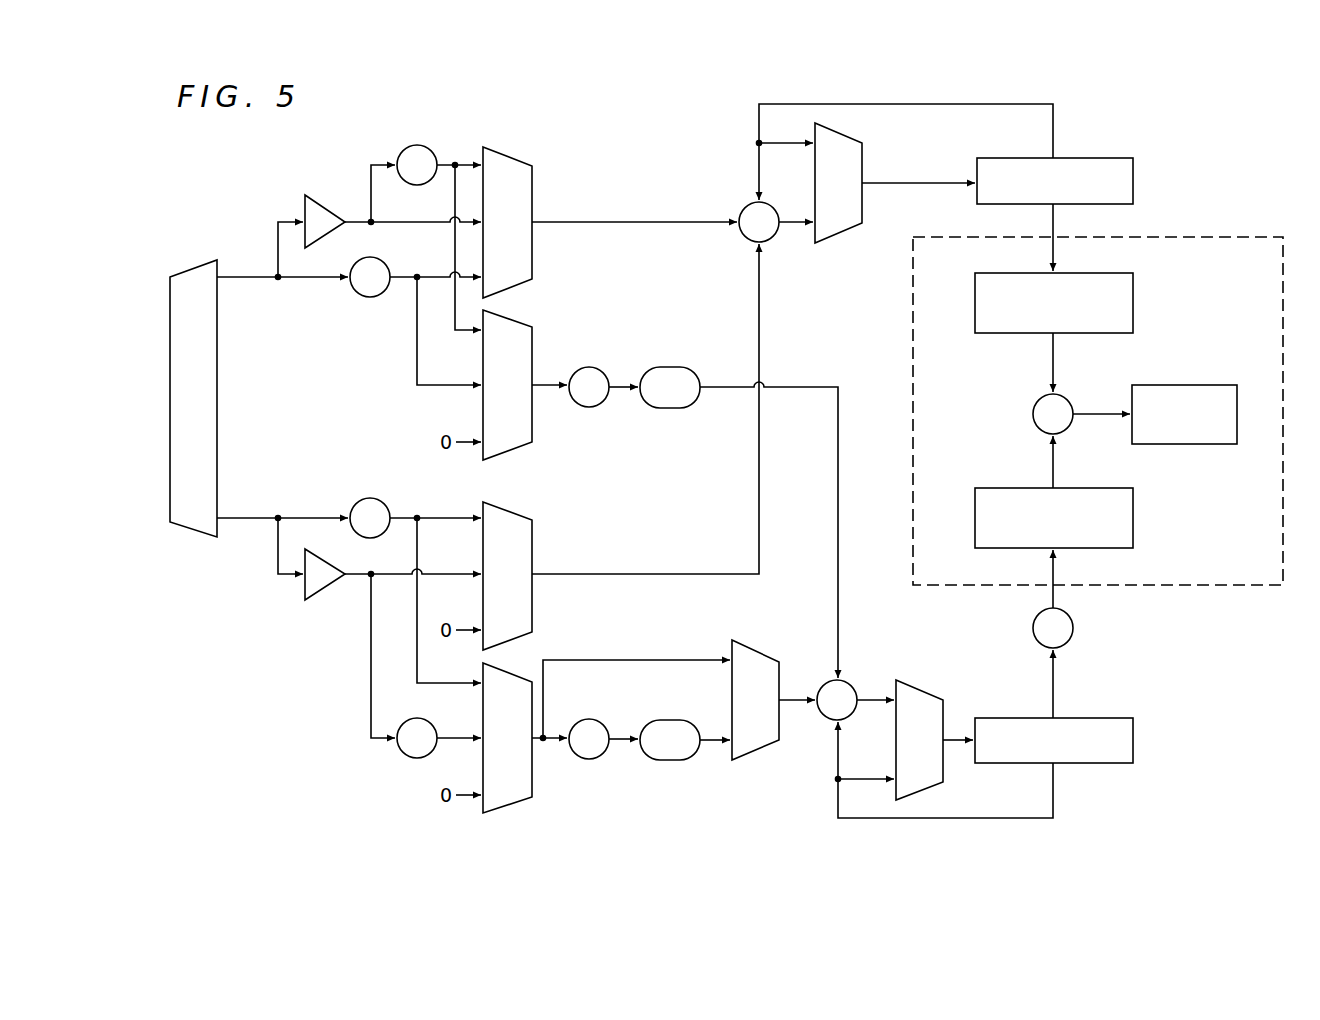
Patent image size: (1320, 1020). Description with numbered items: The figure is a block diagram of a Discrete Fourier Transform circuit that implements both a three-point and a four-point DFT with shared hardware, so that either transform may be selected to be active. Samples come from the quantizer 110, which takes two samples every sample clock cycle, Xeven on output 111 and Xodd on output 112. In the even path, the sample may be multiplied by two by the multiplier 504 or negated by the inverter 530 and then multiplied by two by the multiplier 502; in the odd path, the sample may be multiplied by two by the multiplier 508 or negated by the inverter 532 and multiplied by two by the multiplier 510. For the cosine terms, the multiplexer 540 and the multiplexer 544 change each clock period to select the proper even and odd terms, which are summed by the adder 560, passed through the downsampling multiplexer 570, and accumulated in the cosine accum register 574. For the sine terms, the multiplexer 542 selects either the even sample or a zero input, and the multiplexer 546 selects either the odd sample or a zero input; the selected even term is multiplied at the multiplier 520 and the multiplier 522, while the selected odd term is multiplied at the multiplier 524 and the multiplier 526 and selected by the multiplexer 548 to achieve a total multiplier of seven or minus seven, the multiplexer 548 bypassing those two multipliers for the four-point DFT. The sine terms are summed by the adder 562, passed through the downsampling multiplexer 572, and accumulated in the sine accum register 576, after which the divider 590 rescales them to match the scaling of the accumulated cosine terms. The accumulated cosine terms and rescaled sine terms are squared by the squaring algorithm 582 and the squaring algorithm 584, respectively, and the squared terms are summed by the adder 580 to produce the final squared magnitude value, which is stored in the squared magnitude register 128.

The quantizer 110 is at (194, 264).
The Xeven output 111 is at (243, 282).
The Xodd output 112 is at (243, 523).
The squared magnitude register 128 is at (1180, 385).
The multiplier 502 is at (417, 144).
The multiplier 504 is at (358, 296).
The multiplier 508 is at (372, 497).
The multiplier 510 is at (400, 756).
The multiplier 520 is at (591, 365).
The multiplier 522 is at (672, 365).
The multiplier 524 is at (591, 719).
The multiplier 526 is at (672, 720).
The inverter 530 is at (323, 197).
The inverter 532 is at (316, 607).
The multiplexer 540 is at (515, 160).
The multiplexer 542 is at (523, 324).
The multiplexer 544 is at (523, 513).
The multiplexer 546 is at (515, 806).
The multiplexer 548 is at (758, 645).
The adder 560 is at (742, 209).
The adder 562 is at (853, 683).
The multiplexer 570 is at (869, 157).
The multiplexer 572 is at (936, 691).
The cosine accum register 574 is at (1089, 158).
The sine accum register 576 is at (1133, 743).
The adder 580 is at (1033, 414).
The squaring algorithm 582 is at (1134, 304).
The squaring algorithm 584 is at (1133, 519).
The divider 590 is at (1073, 628).